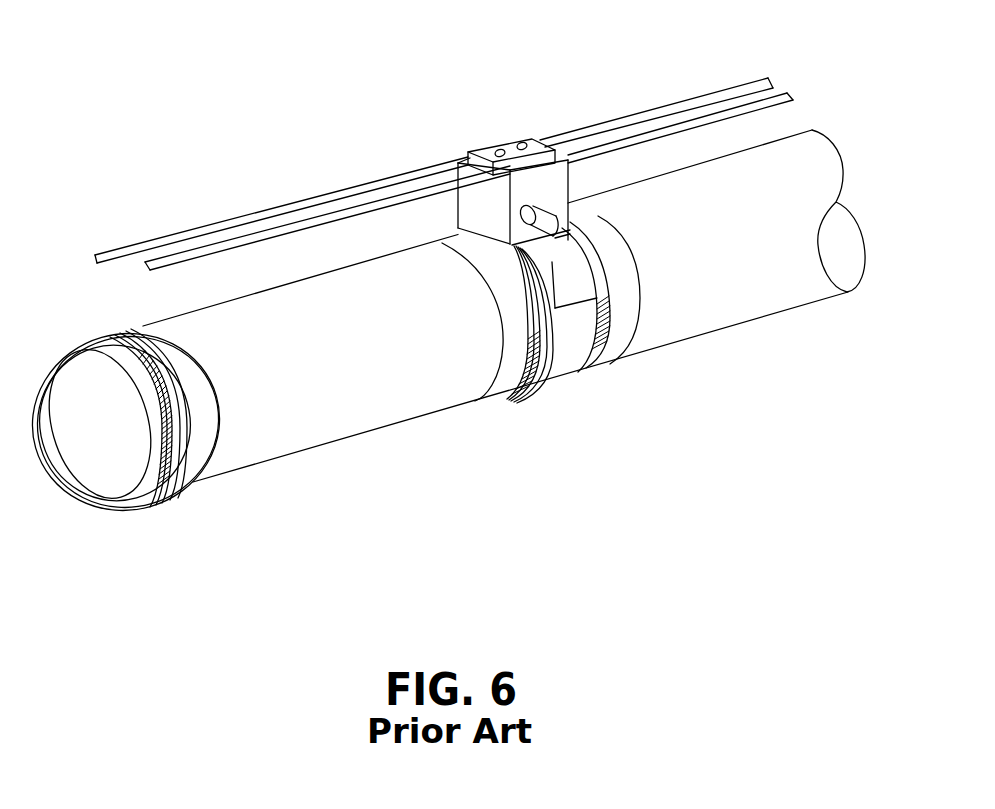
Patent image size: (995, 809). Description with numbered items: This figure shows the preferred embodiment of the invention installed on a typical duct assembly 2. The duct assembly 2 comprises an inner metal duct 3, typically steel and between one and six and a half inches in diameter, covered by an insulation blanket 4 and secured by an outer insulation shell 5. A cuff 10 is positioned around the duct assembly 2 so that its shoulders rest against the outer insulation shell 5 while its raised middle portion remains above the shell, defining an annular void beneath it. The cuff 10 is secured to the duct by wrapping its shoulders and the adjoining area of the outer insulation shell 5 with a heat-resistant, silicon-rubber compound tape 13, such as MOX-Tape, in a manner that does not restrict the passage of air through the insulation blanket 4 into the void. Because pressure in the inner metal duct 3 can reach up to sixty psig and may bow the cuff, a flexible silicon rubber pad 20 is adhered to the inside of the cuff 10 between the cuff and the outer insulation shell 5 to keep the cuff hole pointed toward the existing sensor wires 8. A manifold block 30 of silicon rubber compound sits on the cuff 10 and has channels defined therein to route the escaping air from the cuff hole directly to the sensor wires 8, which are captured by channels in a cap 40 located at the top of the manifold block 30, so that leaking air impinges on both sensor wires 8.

The duct assembly 2 is at (250, 468).
The inner metal duct 3 is at (101, 510).
The insulation blanket 4 is at (199, 482).
The outer insulation shell 5 is at (350, 408).
The sensor wires 8 is at (162, 242).
The cuff 10 is at (553, 388).
The heat-resistant silicon-rubber compound tape 13 is at (510, 403).
The pad 20 is at (566, 208).
The manifold block 30 is at (572, 178).
The cap 40 is at (478, 150).